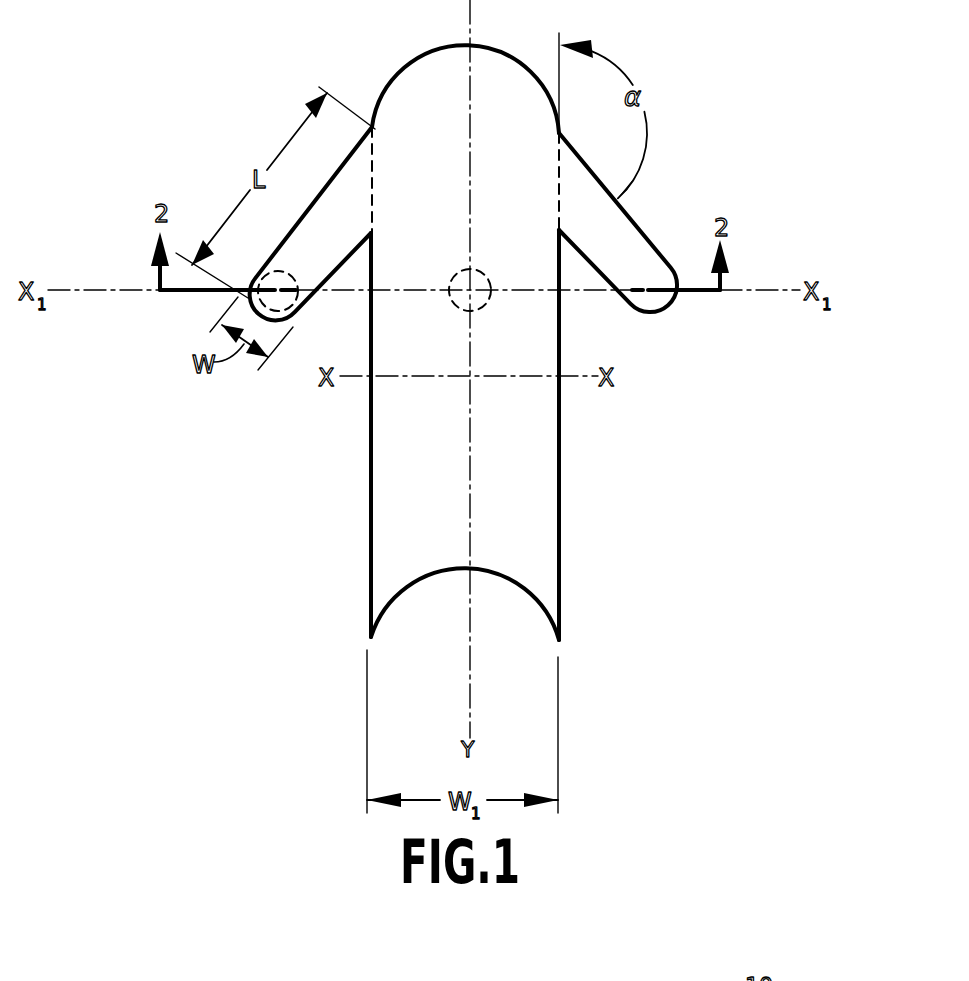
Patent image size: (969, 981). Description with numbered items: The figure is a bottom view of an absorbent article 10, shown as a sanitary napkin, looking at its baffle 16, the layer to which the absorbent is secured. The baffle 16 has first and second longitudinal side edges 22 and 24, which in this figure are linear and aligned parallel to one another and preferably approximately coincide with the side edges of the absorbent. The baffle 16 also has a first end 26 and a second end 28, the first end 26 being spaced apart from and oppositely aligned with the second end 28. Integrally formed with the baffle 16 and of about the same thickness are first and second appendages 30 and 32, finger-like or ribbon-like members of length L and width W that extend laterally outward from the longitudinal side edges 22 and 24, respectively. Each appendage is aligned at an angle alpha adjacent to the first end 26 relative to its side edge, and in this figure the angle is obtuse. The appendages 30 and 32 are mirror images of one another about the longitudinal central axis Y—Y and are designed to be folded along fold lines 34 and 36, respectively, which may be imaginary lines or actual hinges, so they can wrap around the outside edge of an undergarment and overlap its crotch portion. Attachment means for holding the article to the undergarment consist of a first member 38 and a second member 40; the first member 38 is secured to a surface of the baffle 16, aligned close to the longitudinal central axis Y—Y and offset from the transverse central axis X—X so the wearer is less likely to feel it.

The absorbent article 10 is at (728, 60).
The baffle 16 is at (533, 551).
The first longitudinal side edge 22 is at (558, 441).
The second longitudinal side edge 24 is at (371, 452).
The first end 26 is at (510, 52).
The second end 28 is at (418, 698).
The first appendage 30 is at (645, 232).
The second appendage 32 is at (296, 228).
The fold line 34 is at (557, 181).
The fold line 36 is at (376, 182).
The first member 38 is at (480, 303).
The second member 40 is at (300, 316).